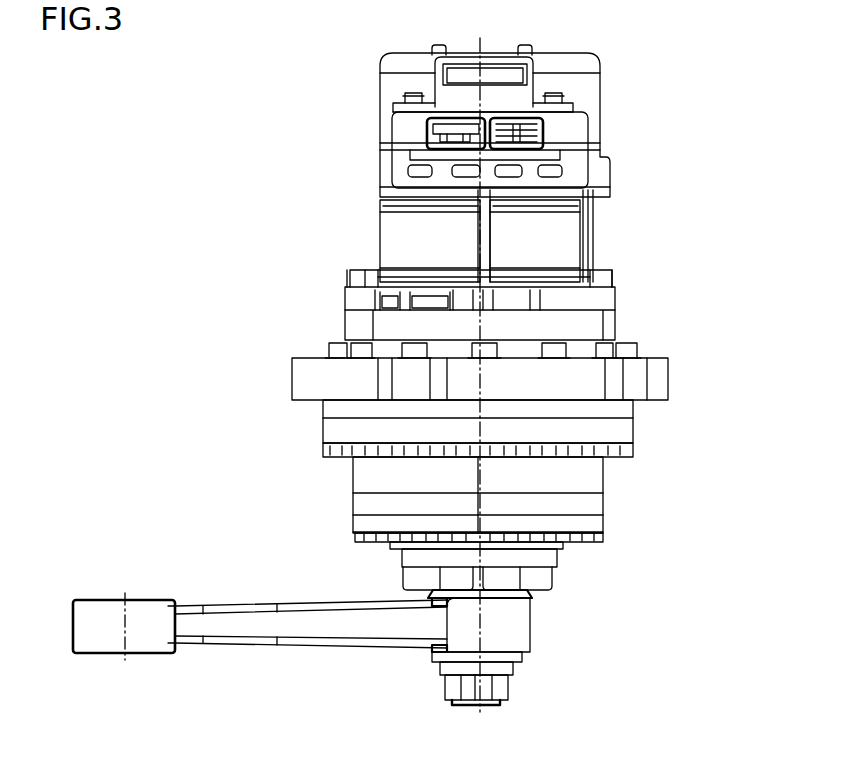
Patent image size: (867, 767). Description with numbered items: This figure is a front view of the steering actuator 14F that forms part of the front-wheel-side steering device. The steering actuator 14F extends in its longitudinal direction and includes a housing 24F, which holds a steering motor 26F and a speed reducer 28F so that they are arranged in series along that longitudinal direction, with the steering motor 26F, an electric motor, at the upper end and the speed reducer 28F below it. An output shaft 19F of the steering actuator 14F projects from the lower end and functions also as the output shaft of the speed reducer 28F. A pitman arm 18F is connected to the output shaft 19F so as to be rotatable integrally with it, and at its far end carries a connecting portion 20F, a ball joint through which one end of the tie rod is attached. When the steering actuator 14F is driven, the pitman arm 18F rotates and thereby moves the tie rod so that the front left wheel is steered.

The steering actuator 14F is at (693, 296).
The steering motor 26F is at (566, 233).
The housing 24F is at (318, 378).
The speed reducer 28F is at (590, 502).
The output shaft 19F is at (515, 621).
The pitman arm 18F is at (293, 612).
The connecting portion 20F is at (100, 606).